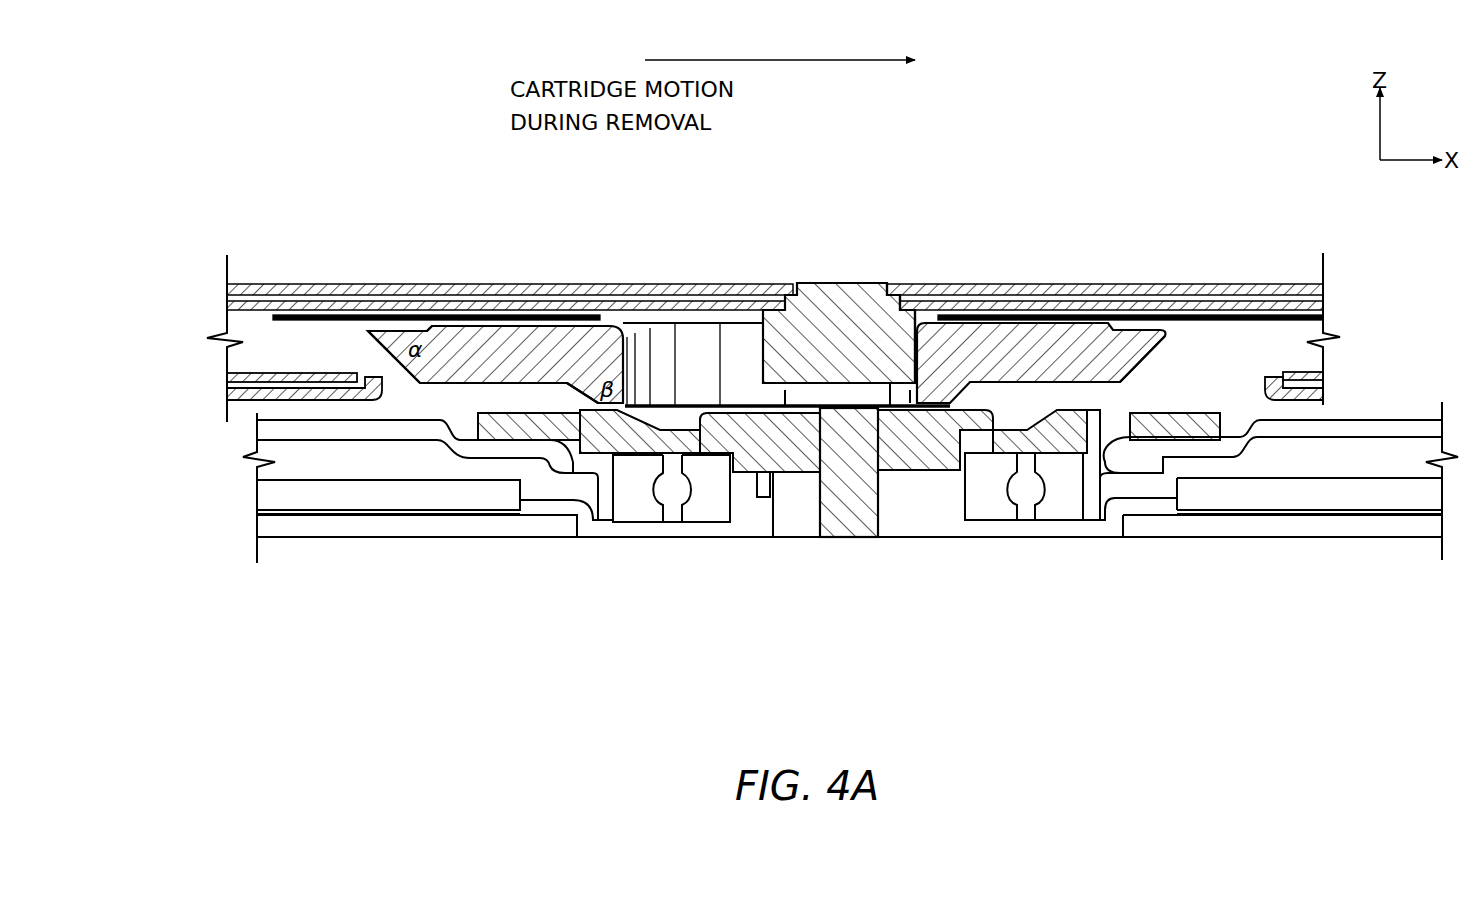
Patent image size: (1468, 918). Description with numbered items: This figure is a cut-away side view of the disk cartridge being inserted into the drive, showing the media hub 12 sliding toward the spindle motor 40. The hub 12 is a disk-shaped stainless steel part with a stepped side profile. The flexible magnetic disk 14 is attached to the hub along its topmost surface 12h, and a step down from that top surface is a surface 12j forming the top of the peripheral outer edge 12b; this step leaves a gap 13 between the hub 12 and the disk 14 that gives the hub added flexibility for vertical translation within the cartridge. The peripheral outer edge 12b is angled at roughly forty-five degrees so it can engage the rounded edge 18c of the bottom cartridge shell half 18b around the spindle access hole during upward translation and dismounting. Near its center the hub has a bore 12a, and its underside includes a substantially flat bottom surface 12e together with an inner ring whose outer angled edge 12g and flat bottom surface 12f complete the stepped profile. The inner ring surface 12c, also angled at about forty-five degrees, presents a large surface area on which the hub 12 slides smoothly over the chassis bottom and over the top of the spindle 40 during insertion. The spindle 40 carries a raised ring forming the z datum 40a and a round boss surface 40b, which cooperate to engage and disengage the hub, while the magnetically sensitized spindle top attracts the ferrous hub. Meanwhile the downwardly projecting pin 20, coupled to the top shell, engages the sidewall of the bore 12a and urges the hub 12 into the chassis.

The media hub 12 is at (570, 350).
The bore 12a is at (910, 343).
The peripheral outer edge 12b is at (393, 388).
The inner ring surface 12c is at (597, 403).
The bottom surface 12e is at (1120, 357).
The bottom surface of inner ring 12f is at (950, 408).
The outer angled edge 12g is at (968, 386).
The topmost surface 12h is at (487, 383).
The surface 12j is at (397, 328).
The gap 13 is at (368, 330).
The flexible magnetic disk 14 is at (320, 322).
The bottom cartridge shell half 18b is at (250, 398).
The rounded edge 18c is at (1260, 384).
The shutter pivot pin 20 is at (817, 300).
The spindle motor 40 is at (788, 445).
The z datum 40a is at (630, 415).
The round boss surface 40b is at (720, 440).